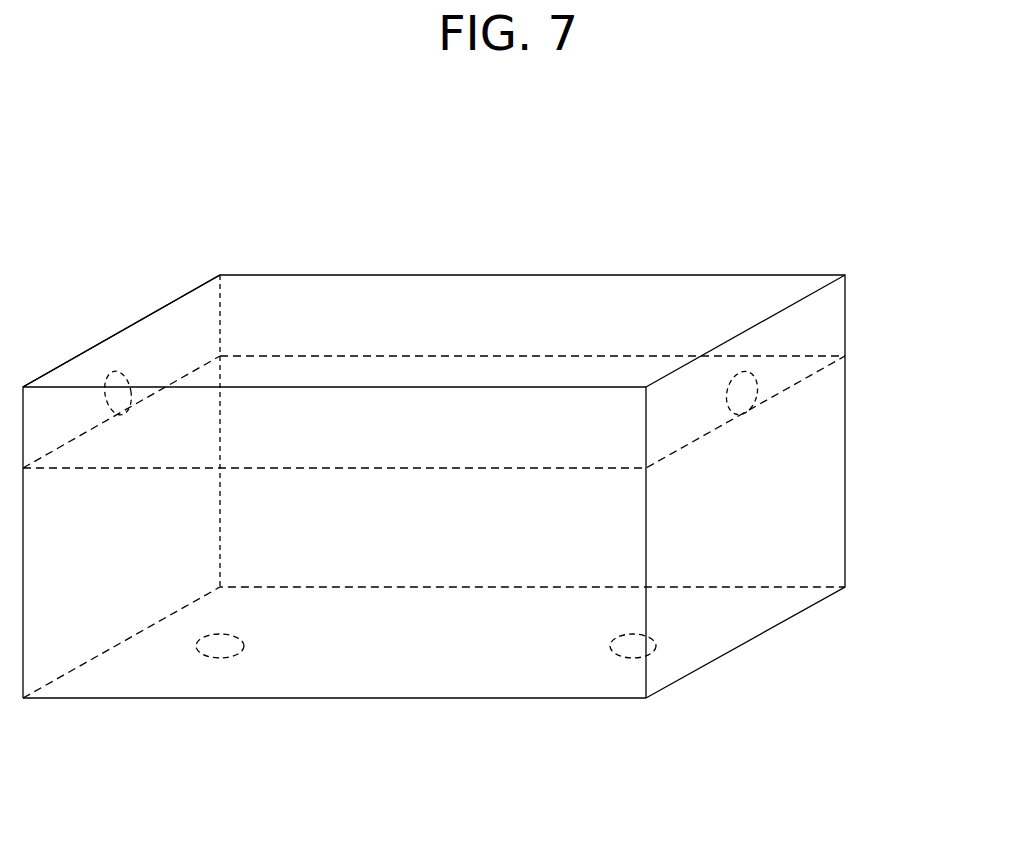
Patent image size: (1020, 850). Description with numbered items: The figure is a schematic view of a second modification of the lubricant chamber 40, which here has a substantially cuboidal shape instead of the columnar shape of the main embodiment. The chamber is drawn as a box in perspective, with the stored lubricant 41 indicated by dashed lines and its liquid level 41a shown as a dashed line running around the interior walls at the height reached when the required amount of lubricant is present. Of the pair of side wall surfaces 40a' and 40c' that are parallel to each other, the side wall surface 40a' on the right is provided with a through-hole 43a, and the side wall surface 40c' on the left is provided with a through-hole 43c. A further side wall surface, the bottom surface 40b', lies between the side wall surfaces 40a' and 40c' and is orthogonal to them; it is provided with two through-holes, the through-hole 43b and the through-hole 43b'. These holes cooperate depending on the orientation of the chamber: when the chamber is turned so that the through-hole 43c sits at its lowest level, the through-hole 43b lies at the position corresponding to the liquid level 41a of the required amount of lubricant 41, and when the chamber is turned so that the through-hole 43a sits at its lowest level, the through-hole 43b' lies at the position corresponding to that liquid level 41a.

The lubricant chamber 40 is at (368, 275).
The side wall surface 40a' is at (745, 446).
The side wall surface (bottom surface) 40b' is at (434, 701).
The side wall surface 40c' is at (121, 392).
The lubricant 41 is at (806, 517).
The liquid level 41a is at (607, 355).
The through-hole 43a is at (756, 379).
The through-hole 43b is at (614, 718).
The through-hole 43b' is at (198, 718).
The through-hole 43c is at (118, 371).